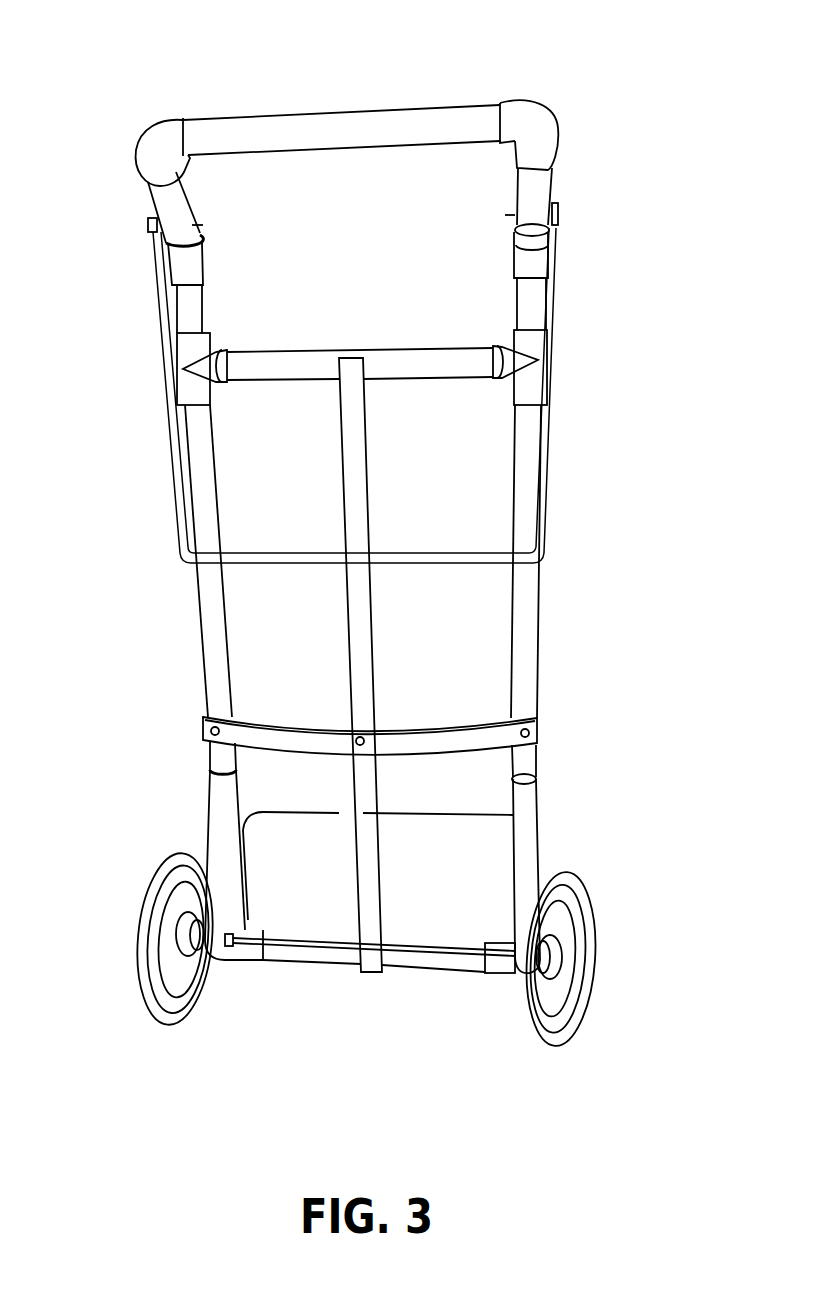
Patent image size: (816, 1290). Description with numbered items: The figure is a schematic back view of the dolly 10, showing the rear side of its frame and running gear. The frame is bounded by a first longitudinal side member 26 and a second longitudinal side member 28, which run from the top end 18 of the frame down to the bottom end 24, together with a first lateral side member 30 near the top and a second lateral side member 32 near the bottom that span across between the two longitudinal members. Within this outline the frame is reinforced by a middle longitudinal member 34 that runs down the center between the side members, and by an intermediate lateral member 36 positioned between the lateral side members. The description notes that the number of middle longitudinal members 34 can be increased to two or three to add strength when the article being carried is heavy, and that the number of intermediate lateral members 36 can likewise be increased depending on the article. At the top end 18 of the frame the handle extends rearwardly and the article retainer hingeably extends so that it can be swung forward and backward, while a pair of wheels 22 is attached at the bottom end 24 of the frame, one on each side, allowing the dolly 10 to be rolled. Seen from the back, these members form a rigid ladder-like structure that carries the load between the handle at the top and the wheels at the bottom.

The dolly 10 is at (126, 50).
The top end of the frame 18 is at (533, 303).
The pair of wheels 22 is at (142, 893).
The bottom end of the frame 24 is at (537, 835).
The first longitudinal side member 26 is at (207, 685).
The second longitudinal side member 28 is at (537, 668).
The first lateral side member 30 is at (447, 380).
The second lateral side member 32 is at (313, 975).
The middle longitudinal member 34 is at (345, 480).
The intermediate lateral member 36 is at (240, 551).